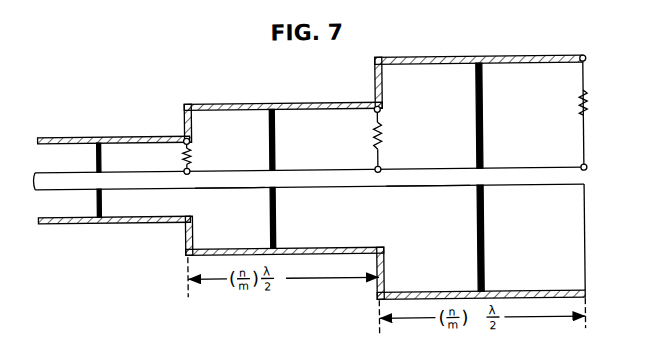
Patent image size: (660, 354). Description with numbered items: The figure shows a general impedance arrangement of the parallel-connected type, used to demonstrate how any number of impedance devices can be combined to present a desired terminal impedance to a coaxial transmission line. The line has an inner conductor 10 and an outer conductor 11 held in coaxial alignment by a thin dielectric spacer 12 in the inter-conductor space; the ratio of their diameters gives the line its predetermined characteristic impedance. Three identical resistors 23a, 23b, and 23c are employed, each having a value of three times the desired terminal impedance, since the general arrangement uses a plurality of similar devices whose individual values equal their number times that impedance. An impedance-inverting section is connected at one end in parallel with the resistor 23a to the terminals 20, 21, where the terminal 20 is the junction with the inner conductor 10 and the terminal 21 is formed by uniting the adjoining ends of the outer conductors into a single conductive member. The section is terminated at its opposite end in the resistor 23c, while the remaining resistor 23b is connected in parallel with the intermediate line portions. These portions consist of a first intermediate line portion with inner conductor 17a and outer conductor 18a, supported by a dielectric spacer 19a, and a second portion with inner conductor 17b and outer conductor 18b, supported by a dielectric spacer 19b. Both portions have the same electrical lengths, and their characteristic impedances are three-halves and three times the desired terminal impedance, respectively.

The inner conductor 10 is at (65, 187).
The outer conductor 11 is at (72, 134).
The dielectric spacer 12 is at (101, 162).
The inner conductor of first intermediate line portion 17a is at (218, 189).
The inner conductor of second intermediate line portion 17b is at (416, 189).
The outer conductor of first intermediate line portion 18a is at (262, 102).
The outer conductor of second intermediate line portion 18b is at (502, 57).
The dielectric spacer 19a is at (276, 140).
The dielectric spacer 19b is at (484, 134).
The terminal 20 is at (184, 163).
The terminal 21 is at (190, 142).
The resistor 23a is at (191, 159).
The resistor 23b is at (380, 150).
The resistor 23c is at (582, 98).